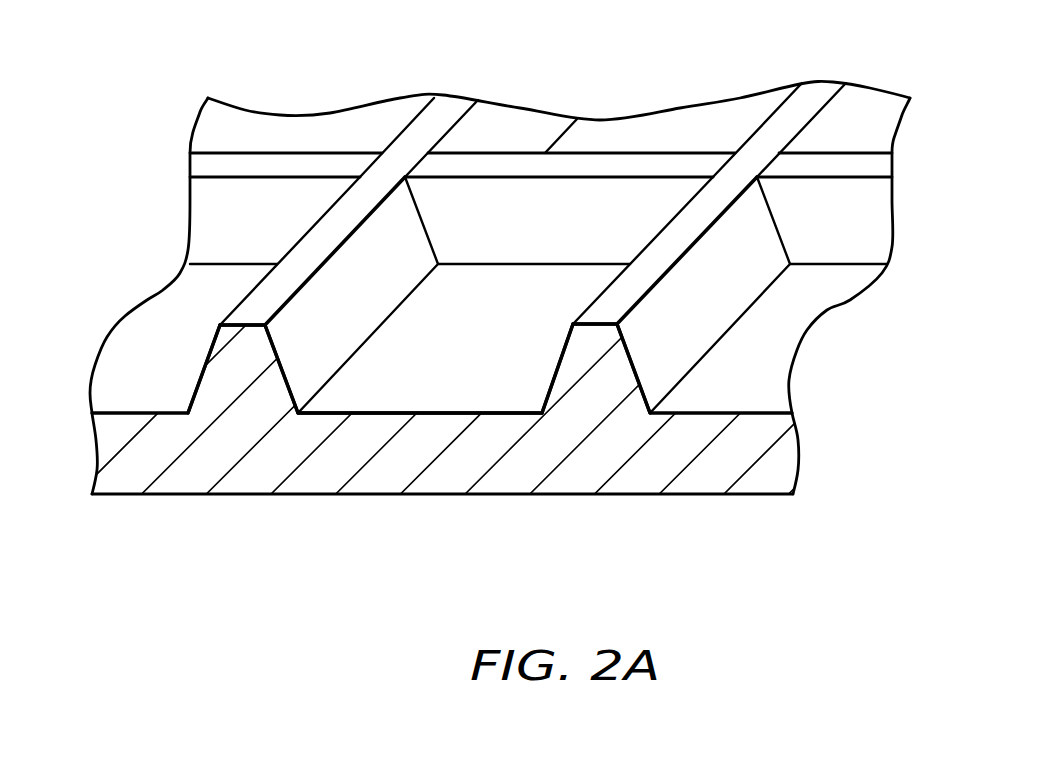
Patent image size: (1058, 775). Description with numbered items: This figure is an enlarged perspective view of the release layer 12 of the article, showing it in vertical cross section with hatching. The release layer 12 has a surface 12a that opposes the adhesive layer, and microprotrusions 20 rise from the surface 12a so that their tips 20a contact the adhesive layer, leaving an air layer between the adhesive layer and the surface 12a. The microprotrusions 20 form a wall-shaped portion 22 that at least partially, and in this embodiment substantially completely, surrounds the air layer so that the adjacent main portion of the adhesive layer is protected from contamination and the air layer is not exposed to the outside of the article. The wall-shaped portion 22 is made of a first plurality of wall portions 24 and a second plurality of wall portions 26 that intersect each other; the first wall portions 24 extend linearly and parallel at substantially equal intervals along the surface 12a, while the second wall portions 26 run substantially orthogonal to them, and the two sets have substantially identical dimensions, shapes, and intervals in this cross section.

The release layer 12 is at (654, 496).
The surface of release layer 12a is at (762, 353).
The microprotrusions 20 is at (608, 158).
The tips of microprotrusions 20a is at (377, 167).
The wall-shaped portion 22 is at (475, 557).
The first plurality of wall portions 24 is at (302, 328).
The second plurality of wall portions 26 is at (482, 230).